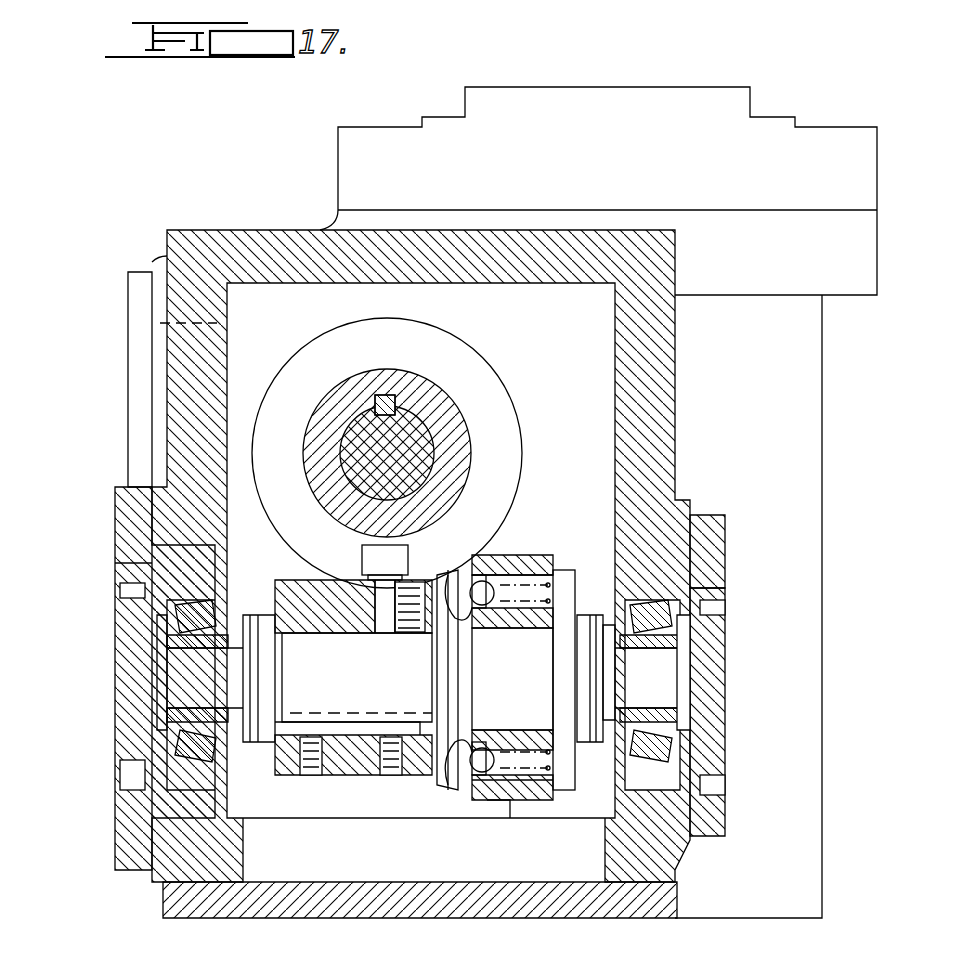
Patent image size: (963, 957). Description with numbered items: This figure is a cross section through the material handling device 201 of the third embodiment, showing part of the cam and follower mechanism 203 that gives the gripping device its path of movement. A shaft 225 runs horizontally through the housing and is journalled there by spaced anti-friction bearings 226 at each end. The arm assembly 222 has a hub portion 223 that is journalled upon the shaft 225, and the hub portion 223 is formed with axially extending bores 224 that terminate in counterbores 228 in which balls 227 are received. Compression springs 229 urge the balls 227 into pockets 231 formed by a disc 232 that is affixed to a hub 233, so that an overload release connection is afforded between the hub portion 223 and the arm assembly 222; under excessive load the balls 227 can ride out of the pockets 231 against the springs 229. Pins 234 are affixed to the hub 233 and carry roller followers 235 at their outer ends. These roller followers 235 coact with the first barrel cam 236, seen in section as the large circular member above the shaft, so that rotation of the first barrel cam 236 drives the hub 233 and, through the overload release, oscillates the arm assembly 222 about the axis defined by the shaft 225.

The material handling device 201 is at (795, 82).
The cam and follower mechanism 203 is at (535, 450).
The arm assembly 222 is at (530, 552).
The hub portion 223 is at (540, 568).
The axially extending bores 224 is at (575, 575).
The shaft 225 is at (530, 700).
The anti-friction bearings 226 is at (185, 718).
The balls 227 is at (526, 552).
The counterbores 228 is at (478, 608).
The compression springs 229 is at (552, 600).
The pockets 231 is at (445, 612).
The disc 232 is at (455, 575).
The hub 233 is at (285, 580).
The pins 234 is at (378, 612).
The roller followers 235 is at (382, 545).
The first barrel cam 236 is at (456, 352).